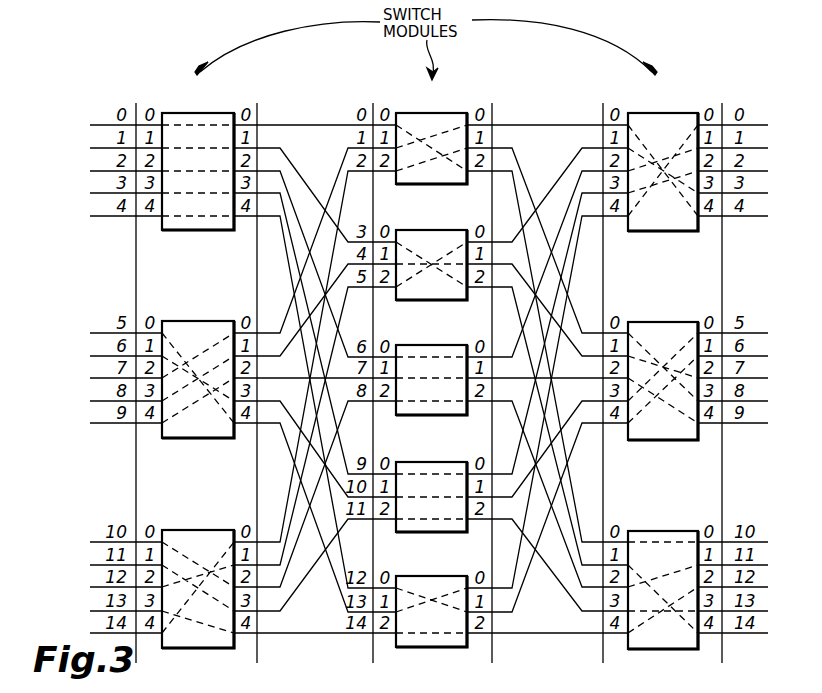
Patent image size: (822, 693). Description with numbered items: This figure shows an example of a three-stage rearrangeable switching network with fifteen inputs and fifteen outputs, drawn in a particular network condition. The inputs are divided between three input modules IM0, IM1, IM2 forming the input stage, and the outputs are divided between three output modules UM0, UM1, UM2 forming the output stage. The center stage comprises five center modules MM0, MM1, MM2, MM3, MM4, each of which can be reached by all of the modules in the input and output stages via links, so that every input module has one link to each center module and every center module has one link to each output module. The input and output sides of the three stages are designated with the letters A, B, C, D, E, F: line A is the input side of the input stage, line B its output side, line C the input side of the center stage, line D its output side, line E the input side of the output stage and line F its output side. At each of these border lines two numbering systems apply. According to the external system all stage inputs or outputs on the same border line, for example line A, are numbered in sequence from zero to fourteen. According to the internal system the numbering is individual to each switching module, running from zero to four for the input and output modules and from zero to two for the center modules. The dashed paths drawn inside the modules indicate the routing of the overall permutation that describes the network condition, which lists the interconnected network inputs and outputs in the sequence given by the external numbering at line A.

The input side of the input stage A is at (135, 373).
The output side of the input stage B is at (257, 373).
The input side of the center stage C is at (373, 373).
The output side of the center stage D is at (493, 373).
The input side of the output stage E is at (603, 373).
The output side of the output stage F is at (721, 373).
The input module IM0 is at (201, 113).
The input module IM1 is at (201, 321).
The input module IM2 is at (201, 530).
The center module MM0 is at (436, 113).
The center module MM1 is at (436, 230).
The center module MM2 is at (436, 345).
The center module MM3 is at (436, 462).
The center module MM4 is at (436, 576).
The output module UM0 is at (668, 113).
The output module UM1 is at (668, 322).
The output module UM2 is at (668, 531).